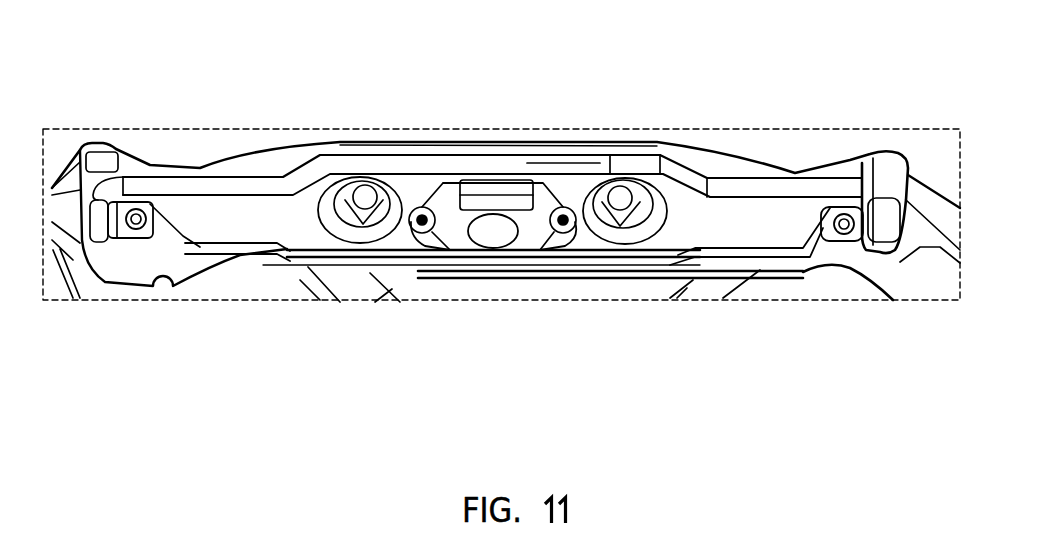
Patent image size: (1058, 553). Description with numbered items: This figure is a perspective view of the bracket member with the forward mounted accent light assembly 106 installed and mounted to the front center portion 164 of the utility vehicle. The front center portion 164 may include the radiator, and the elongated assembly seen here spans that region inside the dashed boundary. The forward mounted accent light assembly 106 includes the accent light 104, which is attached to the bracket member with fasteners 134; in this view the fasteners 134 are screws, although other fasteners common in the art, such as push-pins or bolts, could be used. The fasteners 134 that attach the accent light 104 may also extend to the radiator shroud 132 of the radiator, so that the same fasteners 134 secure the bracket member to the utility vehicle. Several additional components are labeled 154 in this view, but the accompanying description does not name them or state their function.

The radiator shroud 132 is at (256, 151).
The front center portion 164 is at (490, 136).
The fasteners 134 is at (366, 212).
The rollers / mounting brackets 154 is at (102, 226).
The accent light 104 is at (477, 240).
The forward mounted accent light assembly 106 is at (580, 239).